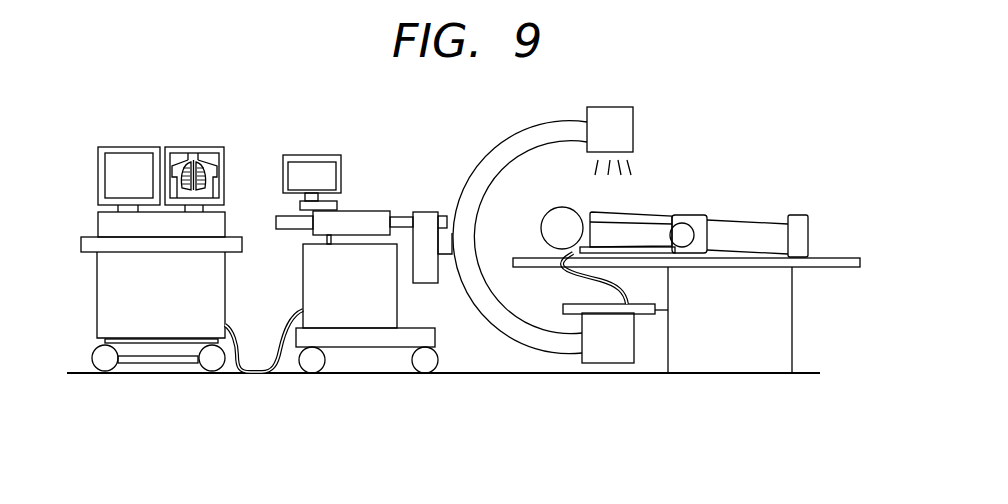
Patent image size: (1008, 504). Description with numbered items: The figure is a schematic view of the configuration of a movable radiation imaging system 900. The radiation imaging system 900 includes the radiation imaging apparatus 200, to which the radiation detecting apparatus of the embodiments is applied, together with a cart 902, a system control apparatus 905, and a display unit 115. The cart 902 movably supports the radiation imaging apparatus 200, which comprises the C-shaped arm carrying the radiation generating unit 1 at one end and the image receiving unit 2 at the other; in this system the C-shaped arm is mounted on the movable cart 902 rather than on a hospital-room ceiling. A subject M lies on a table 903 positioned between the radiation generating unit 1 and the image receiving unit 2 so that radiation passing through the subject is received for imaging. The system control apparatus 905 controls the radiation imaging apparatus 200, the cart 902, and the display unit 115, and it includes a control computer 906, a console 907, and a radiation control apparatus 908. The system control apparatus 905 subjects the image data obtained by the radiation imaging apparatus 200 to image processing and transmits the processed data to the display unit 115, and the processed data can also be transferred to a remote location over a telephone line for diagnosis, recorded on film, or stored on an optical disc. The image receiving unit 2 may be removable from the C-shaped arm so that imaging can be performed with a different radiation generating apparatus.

The radiation imaging system 900 is at (431, 402).
The system control apparatus 905 is at (214, 257).
The control computer 906 is at (129, 179).
The console 907 is at (194, 150).
The radiation control apparatus 908 is at (145, 328).
The display unit 115 is at (192, 145).
The cart 902 is at (369, 342).
The radiation imaging apparatus 200 is at (478, 185).
The radiation generating unit 1 is at (633, 128).
The image receiving unit 2 is at (648, 249).
The bed / table 903 is at (777, 270).
The subject (patient) M is at (760, 222).